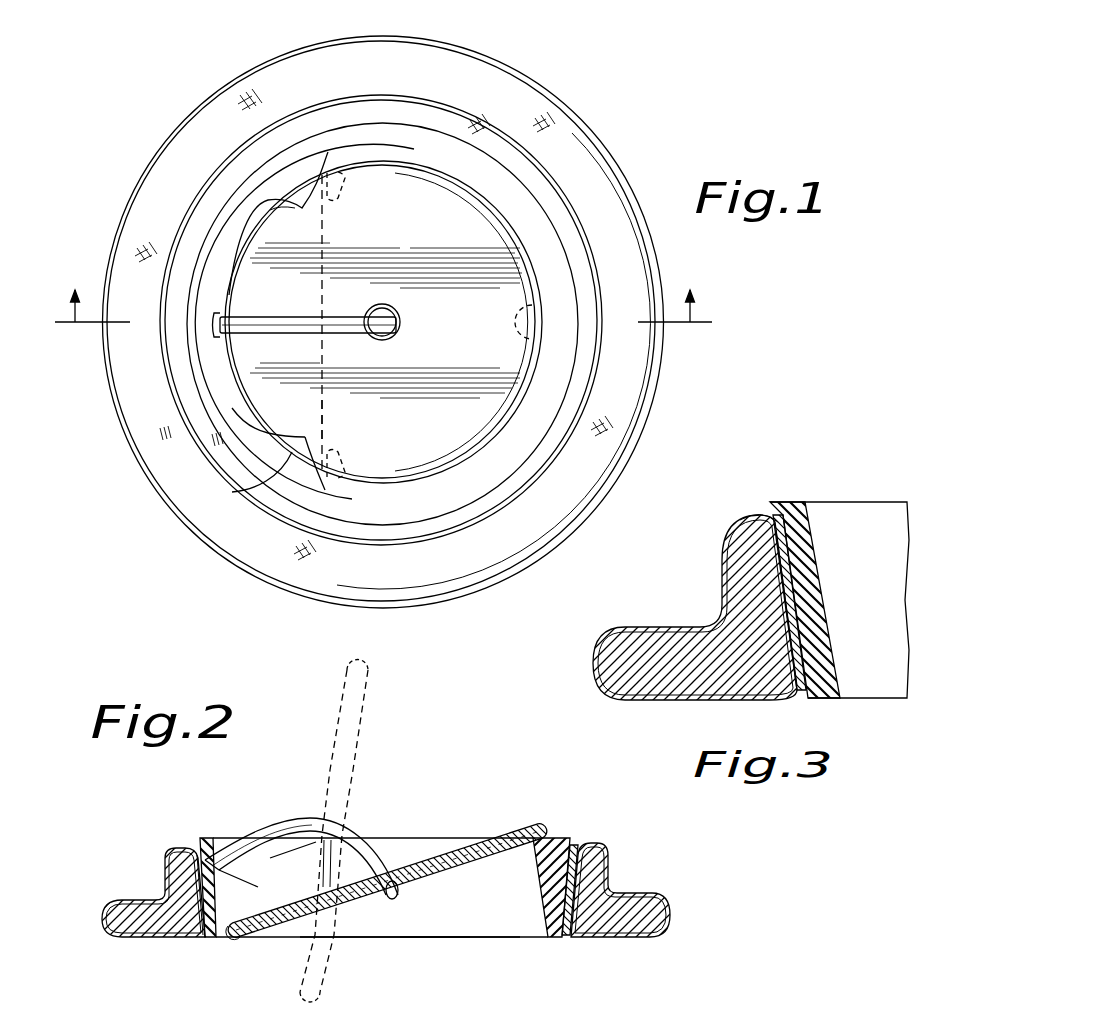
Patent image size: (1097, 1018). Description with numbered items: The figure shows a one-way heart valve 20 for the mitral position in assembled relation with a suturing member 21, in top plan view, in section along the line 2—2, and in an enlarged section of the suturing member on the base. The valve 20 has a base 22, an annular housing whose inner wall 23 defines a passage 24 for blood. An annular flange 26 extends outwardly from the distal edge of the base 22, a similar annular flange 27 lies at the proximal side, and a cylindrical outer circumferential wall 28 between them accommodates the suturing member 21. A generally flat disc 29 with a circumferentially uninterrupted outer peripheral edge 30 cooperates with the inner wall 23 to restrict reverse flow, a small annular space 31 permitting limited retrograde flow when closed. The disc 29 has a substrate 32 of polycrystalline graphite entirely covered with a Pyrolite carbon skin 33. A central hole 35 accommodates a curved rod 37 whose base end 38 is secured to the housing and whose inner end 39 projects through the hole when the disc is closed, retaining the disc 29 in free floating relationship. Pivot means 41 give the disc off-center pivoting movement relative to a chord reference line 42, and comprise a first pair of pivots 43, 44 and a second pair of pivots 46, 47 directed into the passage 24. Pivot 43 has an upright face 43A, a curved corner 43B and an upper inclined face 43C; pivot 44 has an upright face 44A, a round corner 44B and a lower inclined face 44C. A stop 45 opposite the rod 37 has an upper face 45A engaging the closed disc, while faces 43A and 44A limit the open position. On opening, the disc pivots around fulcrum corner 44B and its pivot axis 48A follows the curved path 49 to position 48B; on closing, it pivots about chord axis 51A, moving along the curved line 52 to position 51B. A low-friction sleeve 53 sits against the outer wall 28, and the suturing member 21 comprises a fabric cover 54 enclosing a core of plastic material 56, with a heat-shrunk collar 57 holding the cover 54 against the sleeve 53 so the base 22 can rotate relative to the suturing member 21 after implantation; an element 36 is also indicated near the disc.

In FIG. 1, the valve 20 is at (476, 186).
In FIG. 3, the valve 20 is at (866, 487).
In FIG. 2, the valve 20 is at (498, 817).
In FIG. 1, the suturing member 21 is at (596, 126).
In FIG. 3, the suturing member 21 is at (620, 626).
In FIG. 2, the suturing member 21 is at (650, 868).
In FIG. 1, the base 22 is at (540, 226).
In FIG. 3, the base 22 is at (880, 700).
In FIG. 2, the base 22 is at (470, 938).
In FIG. 3, the inner wall 23 is at (810, 528).
In FIG. 2, the inner wall 23 is at (210, 838).
In FIG. 3, the passage 24 is at (876, 593).
In FIG. 2, the passage 24 is at (380, 887).
In FIG. 3, the annular flange 26 is at (768, 510).
In FIG. 2, the annular flange 26 is at (192, 840).
In FIG. 3, the annular flange 27 is at (803, 693).
In FIG. 2, the annular flange 27 is at (225, 930).
In FIG. 3, the cylindrical outer circumferential wall 28 is at (820, 643).
In FIG. 2, the cylindrical outer circumferential wall 28 is at (573, 847).
In FIG. 1, the disc 29 is at (386, 306).
In FIG. 2, the disc 29 is at (372, 698).
In FIG. 2, the outer peripheral edge 30 is at (537, 840).
In FIG. 2, the annular space 31 is at (232, 940).
In FIG. 2, the substrate 32 is at (480, 847).
In FIG. 2, the skin 33 is at (440, 954).
In FIG. 1, the central hole 35 is at (380, 338).
In FIG. 2, the central hole 35 is at (393, 881).
In FIG. 2, the pivot hole 36 is at (422, 857).
In FIG. 1, the rod 37 is at (340, 317).
In FIG. 2, the rod 37 is at (320, 812).
In FIG. 1, the base end 38 is at (220, 320).
In FIG. 2, the base end 38 is at (245, 920).
In FIG. 2, the inner end 39 is at (403, 933).
In FIG. 1, the pivot means 41 is at (288, 217).
In FIG. 1, the chord reference line 42 is at (322, 420).
In FIG. 1, the pivot 43 is at (345, 183).
In FIG. 2, the pivot 43 is at (378, 928).
In FIG. 2, the upright face 43A is at (328, 928).
In FIG. 2, the curved corner 43B is at (338, 920).
In FIG. 2, the upper inclined face 43C is at (330, 912).
In FIG. 1, the pivot 44 is at (300, 200).
In FIG. 2, the pivot 44 is at (308, 817).
In FIG. 2, the upright face 44A is at (322, 858).
In FIG. 2, the round corner 44B is at (289, 875).
In FIG. 2, the lower inclined face 44C is at (295, 897).
In FIG. 2, the stop 45 is at (537, 913).
In FIG. 1, the upper face 45A is at (524, 318).
In FIG. 2, the upper face 45A is at (557, 850).
In FIG. 1, the pivot 46 is at (348, 460).
In FIG. 1, the pivot 47 is at (232, 492).
In FIG. 2, the pivot axis 48A is at (285, 920).
In FIG. 2, the pivot axis position 48B is at (328, 843).
In FIG. 2, the curved path 49 is at (340, 862).
In FIG. 2, the pivotal chord axis 51A is at (305, 930).
In FIG. 2, the pivotal axis position 51B is at (343, 870).
In FIG. 2, the curved line 52 is at (278, 963).
In FIG. 3, the sleeve 53 is at (800, 565).
In FIG. 2, the sleeve 53 is at (563, 933).
In FIG. 3, the fabric cover 54 is at (703, 700).
In FIG. 2, the fabric cover 54 is at (657, 937).
In FIG. 3, the core of plastic material 56 is at (683, 647).
In FIG. 2, the core of plastic material 56 is at (657, 913).
In FIG. 3, the collar 57 is at (793, 566).
In FIG. 2, the collar 57 is at (585, 847).
In FIG. 1, the section line 2- 2 is at (383, 340).